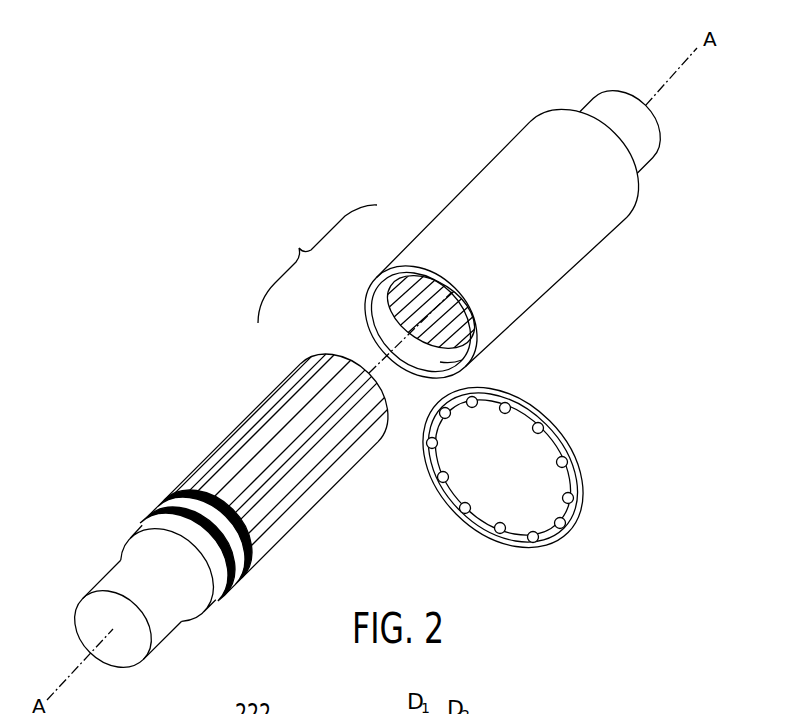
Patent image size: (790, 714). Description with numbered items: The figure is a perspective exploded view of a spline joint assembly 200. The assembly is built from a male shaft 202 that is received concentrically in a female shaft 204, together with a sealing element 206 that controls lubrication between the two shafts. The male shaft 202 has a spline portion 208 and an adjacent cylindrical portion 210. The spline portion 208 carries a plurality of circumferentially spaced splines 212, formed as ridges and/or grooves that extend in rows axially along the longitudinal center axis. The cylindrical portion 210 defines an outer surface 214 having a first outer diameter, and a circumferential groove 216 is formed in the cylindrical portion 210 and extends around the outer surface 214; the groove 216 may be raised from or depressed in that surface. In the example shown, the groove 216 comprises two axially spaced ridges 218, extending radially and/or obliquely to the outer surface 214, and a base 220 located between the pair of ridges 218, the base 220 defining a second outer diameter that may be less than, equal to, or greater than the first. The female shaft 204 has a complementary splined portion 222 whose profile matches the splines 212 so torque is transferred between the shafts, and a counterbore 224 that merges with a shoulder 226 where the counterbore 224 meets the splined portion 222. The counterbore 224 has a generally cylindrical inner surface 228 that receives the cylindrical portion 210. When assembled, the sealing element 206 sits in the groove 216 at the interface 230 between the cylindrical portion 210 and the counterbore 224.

The spline joint assembly 200 is at (198, 258).
The male shaft 202 is at (165, 402).
The female shaft 204 is at (582, 276).
The sealing element 206 is at (583, 474).
The spline portion 208 is at (286, 466).
The cylindrical portion 210 is at (117, 511).
The splines 212 is at (259, 405).
The outer surface 214 is at (219, 574).
The groove 216 is at (172, 470).
The ridges 218 is at (253, 541).
The base 220 is at (183, 500).
The splined portion 222 is at (405, 286).
The counterbore 224 is at (378, 303).
The shoulder 226 is at (398, 314).
The inner surface 228 is at (447, 355).
The interface 230 is at (317, 264).